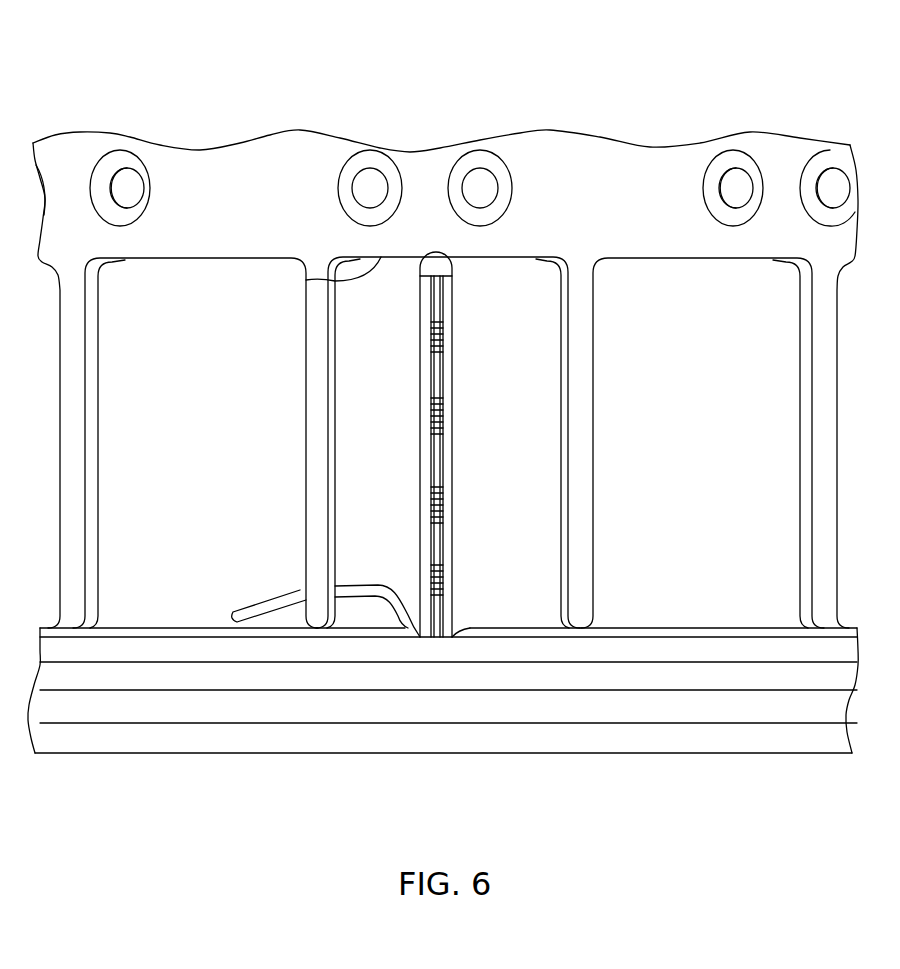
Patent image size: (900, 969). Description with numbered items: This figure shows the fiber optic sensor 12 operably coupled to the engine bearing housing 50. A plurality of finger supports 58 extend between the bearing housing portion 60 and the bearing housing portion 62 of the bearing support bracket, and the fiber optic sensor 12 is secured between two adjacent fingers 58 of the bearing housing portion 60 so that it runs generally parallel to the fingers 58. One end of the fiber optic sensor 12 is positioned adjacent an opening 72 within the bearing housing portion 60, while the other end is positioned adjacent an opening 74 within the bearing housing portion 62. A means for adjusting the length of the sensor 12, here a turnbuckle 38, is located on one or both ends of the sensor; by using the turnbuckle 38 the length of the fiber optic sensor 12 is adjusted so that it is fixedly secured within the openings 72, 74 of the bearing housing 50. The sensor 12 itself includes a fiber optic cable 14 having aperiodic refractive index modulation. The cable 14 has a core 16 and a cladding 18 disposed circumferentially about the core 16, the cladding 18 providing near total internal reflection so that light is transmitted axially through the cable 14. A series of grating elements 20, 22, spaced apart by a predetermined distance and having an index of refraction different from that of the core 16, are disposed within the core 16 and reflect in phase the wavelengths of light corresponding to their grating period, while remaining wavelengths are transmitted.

The bearing housing 50 is at (797, 98).
The bearing housing portion 60 is at (627, 138).
The finger supports 58 is at (305, 446).
The opening 72 is at (305, 280).
The fiber optic sensor 12 is at (451, 444).
The turnbuckle 38 is at (449, 284).
The core 16 is at (445, 452).
The cladding 18 is at (447, 540).
The grating element 20 is at (431, 338).
The grating element 22 is at (429, 393).
The fiber optic cable 14 is at (262, 600).
The opening 74 is at (516, 626).
The bearing housing portion 62 is at (304, 757).